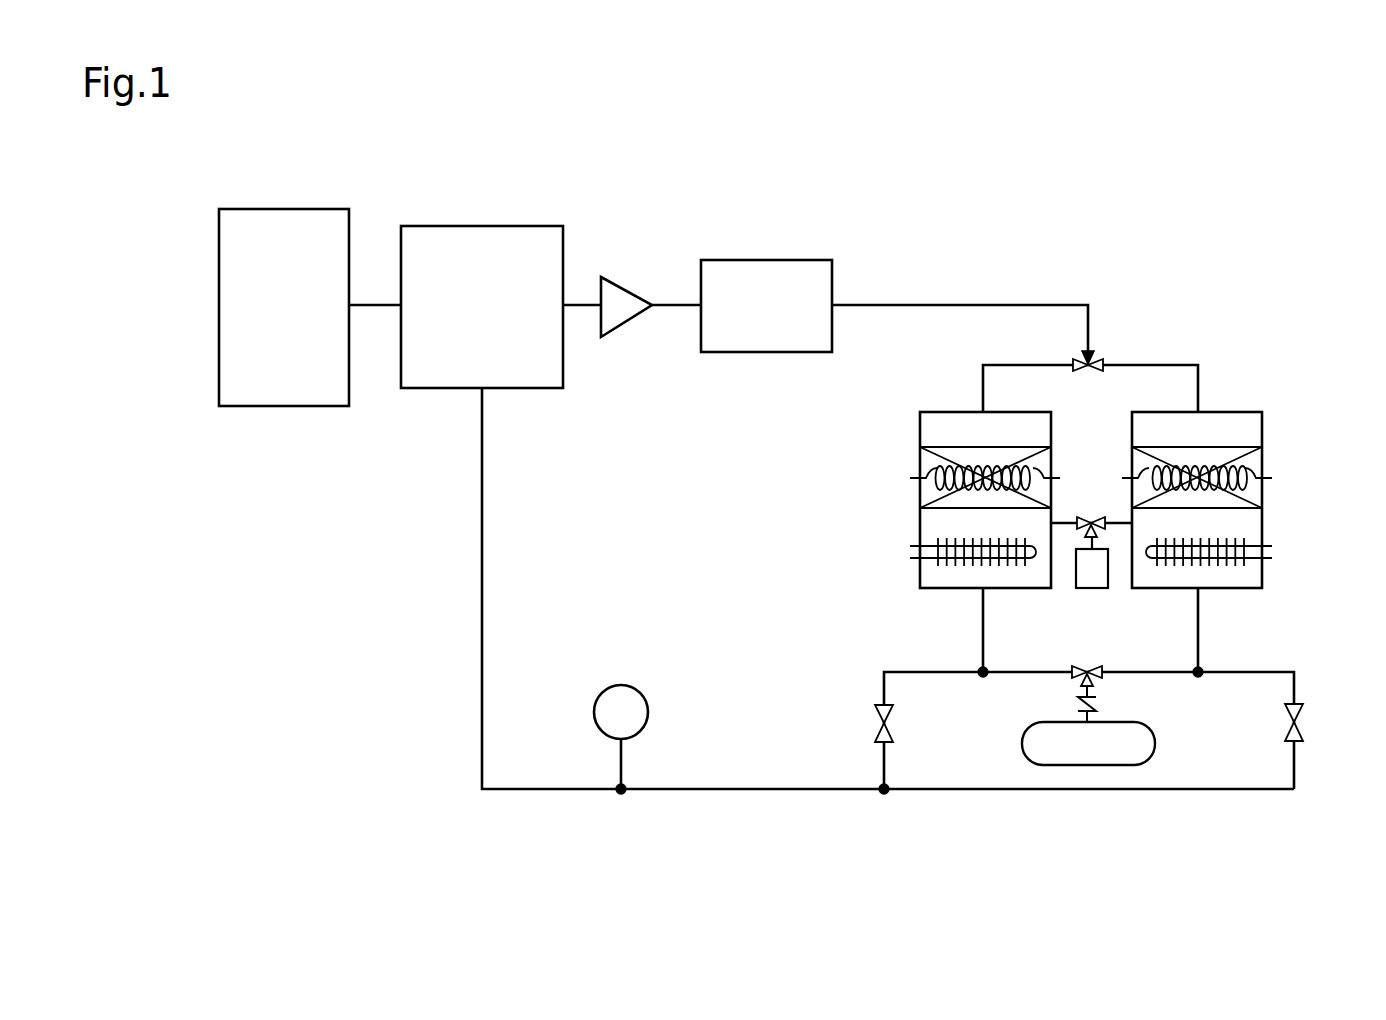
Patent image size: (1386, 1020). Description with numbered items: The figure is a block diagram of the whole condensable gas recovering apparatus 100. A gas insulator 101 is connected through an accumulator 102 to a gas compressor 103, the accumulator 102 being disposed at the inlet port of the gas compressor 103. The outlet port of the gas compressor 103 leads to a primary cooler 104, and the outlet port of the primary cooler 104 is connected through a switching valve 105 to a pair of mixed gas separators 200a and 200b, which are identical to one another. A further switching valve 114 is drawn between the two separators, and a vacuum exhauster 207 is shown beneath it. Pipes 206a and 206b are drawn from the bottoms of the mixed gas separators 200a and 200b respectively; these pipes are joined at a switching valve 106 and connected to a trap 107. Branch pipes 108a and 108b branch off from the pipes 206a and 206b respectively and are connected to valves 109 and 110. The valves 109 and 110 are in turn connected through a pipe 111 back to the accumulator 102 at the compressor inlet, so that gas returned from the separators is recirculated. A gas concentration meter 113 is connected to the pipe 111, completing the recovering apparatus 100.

The condensable gas recovering apparatus 100 is at (1242, 275).
The gas insulator 101 is at (305, 208).
The accumulator 102 is at (484, 226).
The gas compressor 103 is at (626, 289).
The primary cooler 104 is at (776, 260).
The switching valve 105 is at (1100, 358).
The switching valve 106 is at (1100, 685).
The trap 107 is at (1068, 767).
The branch pipe 108a is at (925, 676).
The branch pipe 108b is at (1257, 674).
The valve 109 is at (874, 719).
The valve 110 is at (1302, 712).
The pipe 111 is at (755, 792).
The gas concentration meter 113 is at (605, 689).
The switching valve 114 is at (1093, 517).
The mixed gas separator 200a is at (943, 411).
The mixed gas separator 200b is at (1239, 411).
The pipe 206a is at (979, 640).
The pipe 206b is at (1199, 641).
The vacuum exhauster 207 is at (1080, 589).